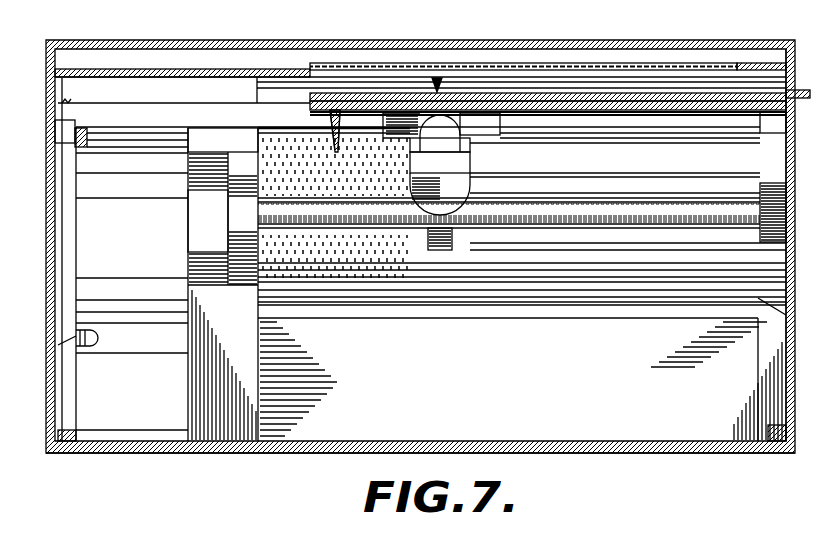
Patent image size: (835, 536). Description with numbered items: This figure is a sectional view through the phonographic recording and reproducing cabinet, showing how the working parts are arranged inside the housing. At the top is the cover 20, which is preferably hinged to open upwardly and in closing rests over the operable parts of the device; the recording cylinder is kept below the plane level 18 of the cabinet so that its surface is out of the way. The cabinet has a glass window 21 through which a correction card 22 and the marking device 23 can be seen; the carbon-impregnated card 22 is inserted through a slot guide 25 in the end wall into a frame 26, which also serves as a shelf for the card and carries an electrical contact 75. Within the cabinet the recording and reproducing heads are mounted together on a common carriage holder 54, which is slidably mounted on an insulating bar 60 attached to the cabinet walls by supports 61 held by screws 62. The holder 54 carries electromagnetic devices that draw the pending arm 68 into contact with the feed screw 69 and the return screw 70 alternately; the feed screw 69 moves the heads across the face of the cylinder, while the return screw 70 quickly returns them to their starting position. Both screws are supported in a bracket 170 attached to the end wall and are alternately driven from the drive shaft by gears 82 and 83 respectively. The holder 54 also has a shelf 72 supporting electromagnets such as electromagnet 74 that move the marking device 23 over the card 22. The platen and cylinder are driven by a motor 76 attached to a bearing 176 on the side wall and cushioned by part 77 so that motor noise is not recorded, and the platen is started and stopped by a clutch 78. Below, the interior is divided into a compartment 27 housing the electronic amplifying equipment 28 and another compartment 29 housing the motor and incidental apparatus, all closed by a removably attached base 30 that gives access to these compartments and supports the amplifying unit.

The plane level 18 is at (142, 68).
The cover 20 is at (197, 47).
The glass window 21 is at (323, 68).
The correction card 22 is at (480, 80).
The marking device 23 is at (443, 77).
The slot guide 25 is at (795, 58).
The frame 26 is at (620, 97).
The compartment 27 is at (522, 369).
The electronic amplifying equipment 28 is at (345, 379).
The compartment 29 is at (224, 365).
The base 30 is at (187, 455).
The carriage holder 54 is at (480, 124).
The bar 60 is at (197, 113).
The supports 61 is at (62, 130).
The screws 62 is at (72, 101).
The pending arm 68 is at (453, 241).
The feed screw 69 is at (640, 206).
The return screw 70 is at (590, 192).
The shelf 72 is at (585, 176).
The electromagnet 74 is at (421, 132).
The electrical contact 75 is at (560, 76).
The motor 76 is at (158, 284).
The cushioning part 77 is at (56, 366).
The clutch 78 is at (299, 206).
The gear 82 is at (208, 221).
The gear 83 is at (223, 252).
The bracket 170 is at (771, 182).
The bearing 176 is at (62, 256).